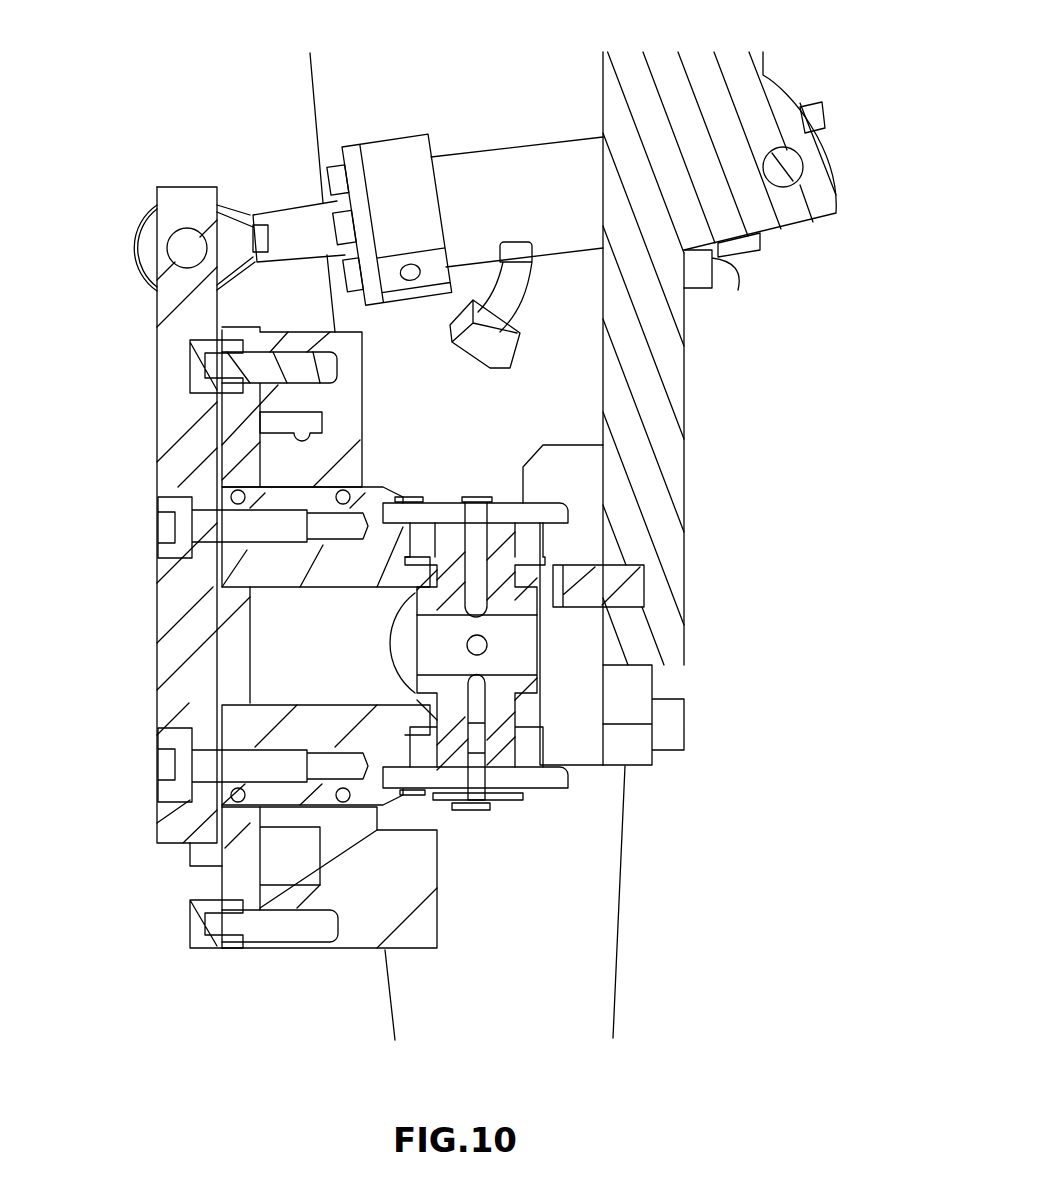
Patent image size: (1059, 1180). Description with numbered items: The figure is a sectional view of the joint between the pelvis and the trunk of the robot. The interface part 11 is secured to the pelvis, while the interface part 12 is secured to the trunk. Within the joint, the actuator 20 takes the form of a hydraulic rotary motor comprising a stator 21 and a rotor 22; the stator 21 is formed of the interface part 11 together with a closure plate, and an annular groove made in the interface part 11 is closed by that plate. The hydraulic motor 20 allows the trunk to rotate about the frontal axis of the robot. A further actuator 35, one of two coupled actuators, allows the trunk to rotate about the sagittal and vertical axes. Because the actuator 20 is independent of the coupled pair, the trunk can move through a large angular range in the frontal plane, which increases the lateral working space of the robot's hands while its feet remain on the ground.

The interface part 11 is at (343, 950).
The interface part 12 is at (668, 365).
The hydraulic rotary motor 20 is at (121, 667).
The stator 21 is at (412, 878).
The rotor 22 is at (350, 585).
The actuator 35 is at (514, 190).